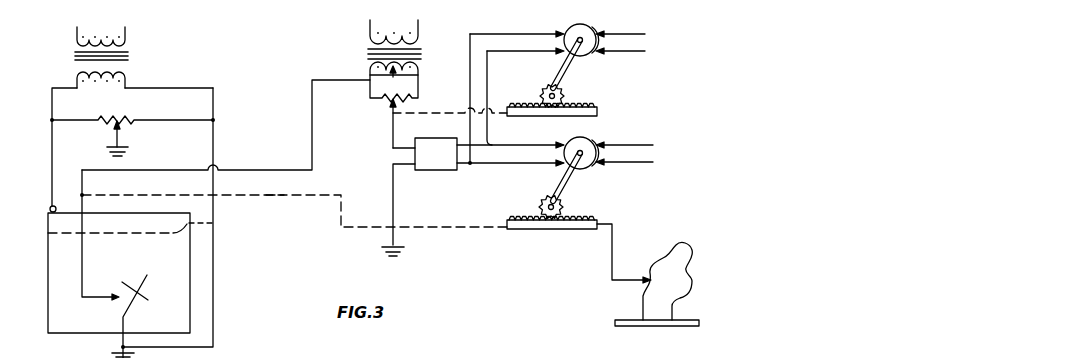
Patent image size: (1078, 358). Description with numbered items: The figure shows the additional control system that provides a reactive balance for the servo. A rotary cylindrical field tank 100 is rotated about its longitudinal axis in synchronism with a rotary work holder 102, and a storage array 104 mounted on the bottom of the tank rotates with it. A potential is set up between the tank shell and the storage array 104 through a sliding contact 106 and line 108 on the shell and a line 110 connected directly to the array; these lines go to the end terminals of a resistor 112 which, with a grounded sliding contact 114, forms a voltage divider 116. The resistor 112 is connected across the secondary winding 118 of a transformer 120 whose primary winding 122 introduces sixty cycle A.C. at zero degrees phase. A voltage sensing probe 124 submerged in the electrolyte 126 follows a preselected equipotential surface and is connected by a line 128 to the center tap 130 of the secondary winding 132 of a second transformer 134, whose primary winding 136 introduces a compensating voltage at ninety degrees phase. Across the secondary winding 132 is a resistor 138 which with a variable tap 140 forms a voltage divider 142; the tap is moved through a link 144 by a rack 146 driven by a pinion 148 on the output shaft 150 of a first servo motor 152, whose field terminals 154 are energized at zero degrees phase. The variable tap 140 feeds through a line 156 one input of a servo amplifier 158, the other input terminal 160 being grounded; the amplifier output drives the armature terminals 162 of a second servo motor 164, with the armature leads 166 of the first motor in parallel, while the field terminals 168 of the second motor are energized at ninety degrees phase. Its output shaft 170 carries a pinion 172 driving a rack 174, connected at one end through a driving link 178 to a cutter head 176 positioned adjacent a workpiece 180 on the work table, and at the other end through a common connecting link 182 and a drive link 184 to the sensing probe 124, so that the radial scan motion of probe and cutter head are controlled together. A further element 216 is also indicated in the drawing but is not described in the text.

The field tank 100 is at (48, 276).
The work holder 102 is at (623, 318).
The storage array 104 is at (148, 300).
The sliding contact 106 is at (50, 210).
The line 108 is at (52, 162).
The line 110 is at (213, 272).
The resistor 112 is at (120, 117).
The grounded sliding contact 114 is at (120, 139).
The voltage divider 116 is at (97, 145).
The secondary winding 118 is at (125, 75).
The transformer 120 is at (96, 45).
The primary winding 122 is at (125, 37).
The voltage sensing probe 124 is at (95, 293).
The electrolyte 126 is at (148, 220).
The line 128 is at (192, 169).
The center tap 130 is at (418, 75).
The secondary winding 132 is at (368, 67).
The second transformer 134 is at (389, 51).
The primary winding 136 is at (420, 36).
The resistor 138 is at (382, 97).
The variable tap 140 is at (390, 103).
The voltage divider 142 is at (450, 110).
The link 144 is at (451, 116).
The rack 146 is at (597, 107).
The pinion 148 is at (540, 91).
The output shaft 150 is at (563, 75).
The first servo motor 152 is at (583, 30).
The field terminals 154 is at (633, 50).
The line 156 is at (392, 138).
The servo amplifier 158 is at (437, 170).
The input terminal 160 is at (393, 189).
The armature terminals 162 is at (522, 162).
The second servo motor 164 is at (589, 143).
The armature leads 166 is at (517, 50).
The field terminals 168 is at (628, 145).
The output shaft 170 is at (565, 188).
The pinion 172 is at (540, 203).
The rack 174 is at (555, 229).
The cutter head 176 is at (646, 280).
The driving link 178 is at (612, 263).
The workpiece 180 is at (680, 281).
The common connecting link 182 is at (274, 196).
The drive link 184 is at (87, 182).
The element 216 is at (693, 354).